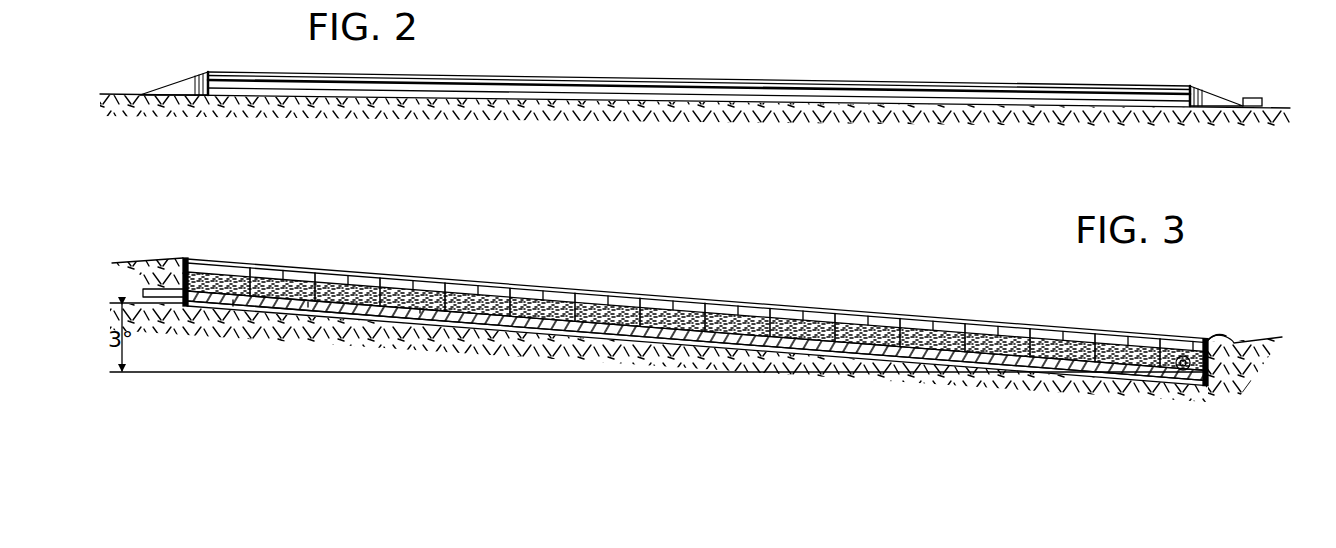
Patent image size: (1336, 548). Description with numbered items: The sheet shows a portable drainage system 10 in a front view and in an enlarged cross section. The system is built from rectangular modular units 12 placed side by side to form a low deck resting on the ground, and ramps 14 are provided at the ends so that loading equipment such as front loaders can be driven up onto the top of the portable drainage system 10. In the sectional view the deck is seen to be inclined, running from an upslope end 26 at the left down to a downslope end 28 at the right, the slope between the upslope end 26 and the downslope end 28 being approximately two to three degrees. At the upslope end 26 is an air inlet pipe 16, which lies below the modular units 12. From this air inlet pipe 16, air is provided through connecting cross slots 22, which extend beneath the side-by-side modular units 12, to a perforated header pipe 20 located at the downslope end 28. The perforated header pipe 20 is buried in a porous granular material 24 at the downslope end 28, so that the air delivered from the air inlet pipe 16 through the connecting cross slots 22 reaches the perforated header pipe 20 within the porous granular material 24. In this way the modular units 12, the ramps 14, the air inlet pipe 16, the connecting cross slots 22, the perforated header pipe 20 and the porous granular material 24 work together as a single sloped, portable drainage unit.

In FIG. 2, the portable drainage system 10 is at (889, 49).
In FIG. 3, the portable drainage system 10 is at (849, 261).
In FIG. 3, the modular units 12 is at (763, 353).
In FIG. 2, the ramps 14 is at (190, 74).
In FIG. 3, the air inlet pipe 16 is at (184, 309).
In FIG. 2, the perforated header pipe 20 is at (1250, 98).
In FIG. 3, the perforated header pipe 20 is at (1165, 380).
In FIG. 3, the connecting cross slots 22 is at (420, 313).
In FIG. 3, the porous granular material 24 is at (1205, 382).
In FIG. 3, the upslope end 26 is at (172, 262).
In FIG. 3, the downslope end 28 is at (1233, 343).